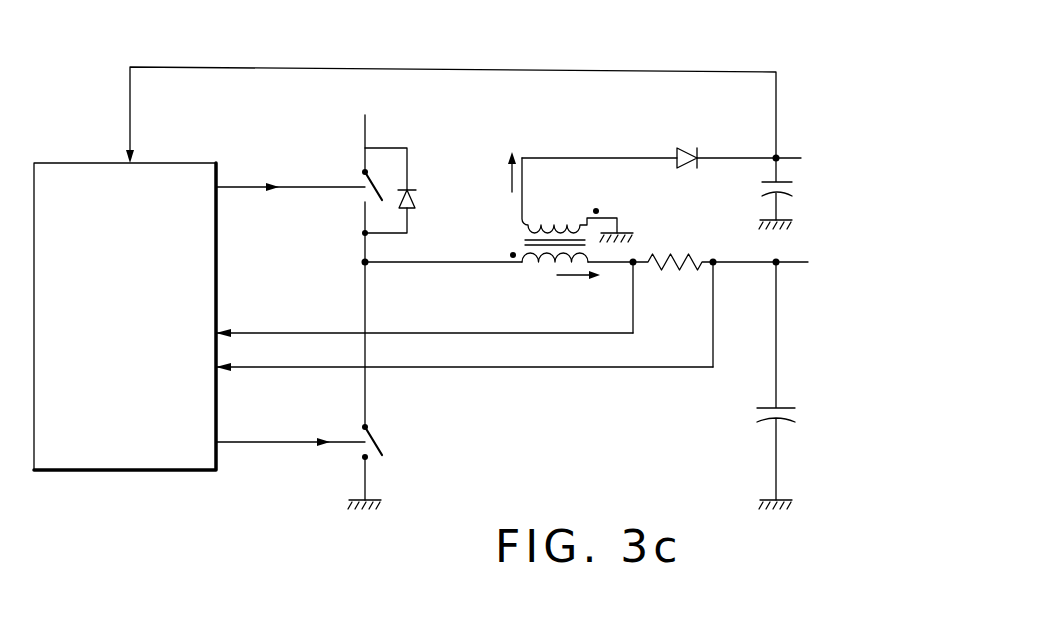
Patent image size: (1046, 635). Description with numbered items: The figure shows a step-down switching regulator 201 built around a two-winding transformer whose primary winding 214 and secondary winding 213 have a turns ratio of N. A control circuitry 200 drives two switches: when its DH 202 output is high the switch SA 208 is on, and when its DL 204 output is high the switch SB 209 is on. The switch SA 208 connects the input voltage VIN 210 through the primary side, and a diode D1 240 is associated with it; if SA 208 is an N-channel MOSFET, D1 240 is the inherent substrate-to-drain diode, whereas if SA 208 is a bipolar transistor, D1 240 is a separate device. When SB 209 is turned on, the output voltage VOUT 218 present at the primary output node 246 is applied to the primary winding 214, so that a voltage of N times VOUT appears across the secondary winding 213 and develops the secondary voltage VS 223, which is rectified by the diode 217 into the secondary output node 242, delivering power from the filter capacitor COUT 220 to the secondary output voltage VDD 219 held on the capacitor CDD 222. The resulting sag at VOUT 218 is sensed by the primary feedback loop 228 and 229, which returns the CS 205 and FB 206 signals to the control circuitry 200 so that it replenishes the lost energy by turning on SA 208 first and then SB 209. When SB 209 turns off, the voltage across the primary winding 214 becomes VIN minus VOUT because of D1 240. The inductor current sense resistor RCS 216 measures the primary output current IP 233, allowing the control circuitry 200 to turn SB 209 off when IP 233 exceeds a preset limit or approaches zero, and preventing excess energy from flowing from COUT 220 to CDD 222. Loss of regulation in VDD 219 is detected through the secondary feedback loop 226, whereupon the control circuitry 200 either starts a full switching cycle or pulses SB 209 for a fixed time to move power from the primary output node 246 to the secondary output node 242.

The control circuitry 200 is at (125, 316).
The step-down switching regulator 201 is at (644, 60).
The DH 202 is at (290, 176).
The DL 204 is at (290, 431).
The CS current sense signal line 205 is at (424, 322).
The FB feedback signal line 206 is at (464, 356).
The switch SA 208 is at (357, 200).
The switch SB 209 is at (375, 458).
The input voltage VIN 210 is at (396, 128).
The secondary winding 213 is at (555, 212).
The primary winding 214 is at (537, 266).
The inductor current sense resistor RCS 216 is at (673, 270).
The diode 217 is at (688, 147).
The output voltage VOUT 218 is at (841, 262).
The secondary output voltage VDD 219 is at (833, 159).
The filter capacitor COUT 220 is at (785, 426).
The capacitor CDD 222 is at (796, 193).
The secondary voltage VS 223 is at (582, 166).
The secondary feedback loop 226 is at (277, 68).
The primary feedback loop 228 is at (480, 337).
The primary feedback loop 229 is at (582, 370).
The primary output current IP 233 is at (593, 287).
The diode D1 240 is at (415, 198).
The secondary output node 242 is at (778, 156).
The primary output node 246 is at (778, 265).